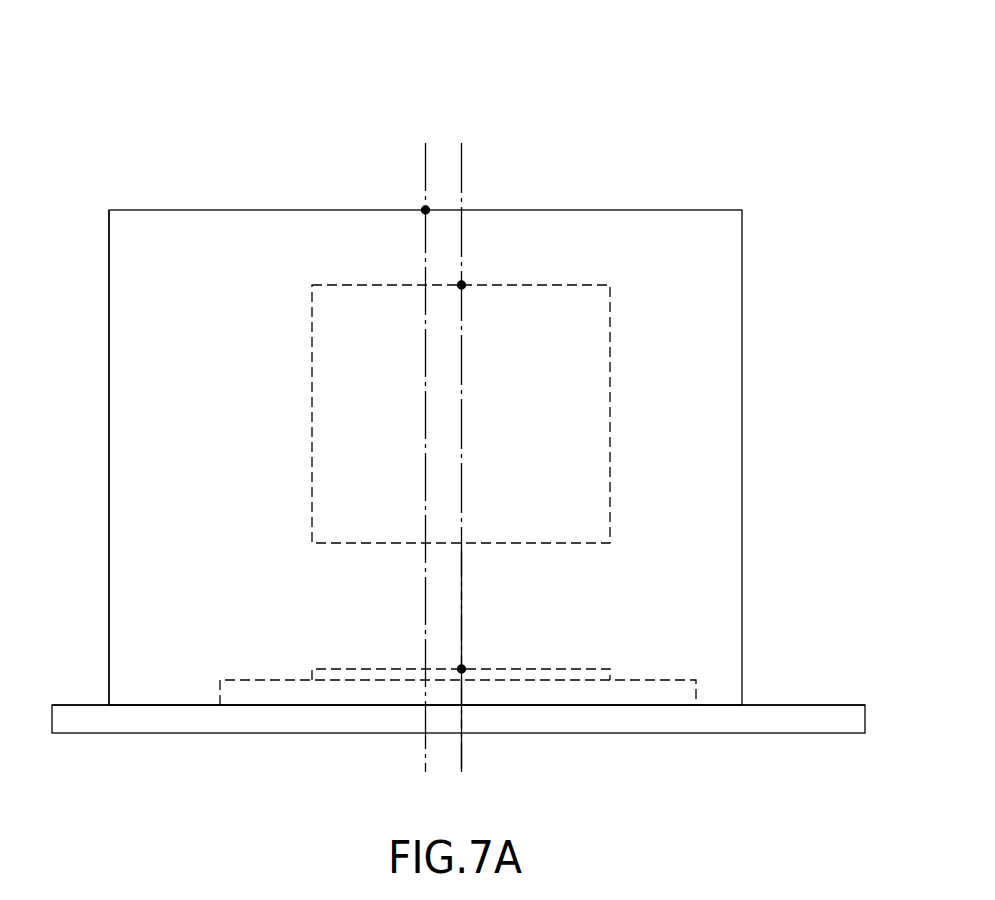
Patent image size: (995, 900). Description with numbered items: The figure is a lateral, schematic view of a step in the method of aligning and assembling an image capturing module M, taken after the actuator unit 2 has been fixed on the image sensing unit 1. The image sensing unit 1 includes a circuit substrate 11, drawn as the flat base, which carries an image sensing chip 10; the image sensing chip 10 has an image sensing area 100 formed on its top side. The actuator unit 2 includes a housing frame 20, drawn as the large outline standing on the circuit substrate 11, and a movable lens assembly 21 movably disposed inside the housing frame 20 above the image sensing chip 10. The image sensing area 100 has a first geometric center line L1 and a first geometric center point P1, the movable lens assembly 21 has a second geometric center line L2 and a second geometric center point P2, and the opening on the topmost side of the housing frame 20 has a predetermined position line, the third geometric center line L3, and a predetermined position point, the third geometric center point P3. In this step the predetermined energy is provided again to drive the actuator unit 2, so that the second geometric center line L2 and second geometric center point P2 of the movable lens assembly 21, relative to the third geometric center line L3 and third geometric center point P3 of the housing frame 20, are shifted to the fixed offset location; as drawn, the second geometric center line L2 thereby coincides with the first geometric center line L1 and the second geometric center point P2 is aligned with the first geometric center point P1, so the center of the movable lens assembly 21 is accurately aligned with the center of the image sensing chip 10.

The image capturing module M is at (145, 46).
The image sensing unit 1 is at (797, 706).
The circuit substrate 11 is at (160, 722).
The actuator unit 2 is at (664, 209).
The housing frame 20 is at (120, 391).
The movable lens assembly 21 is at (328, 381).
The image sensing chip 10 is at (287, 695).
The image sensing area 100 is at (376, 673).
The first geometric center line L1 is at (462, 587).
The second geometric center line L2 is at (462, 157).
The third geometric center line L3 is at (424, 237).
The first geometric center point P1 is at (464, 667).
The second geometric center point P2 is at (463, 283).
The third geometric center point P3 is at (424, 208).